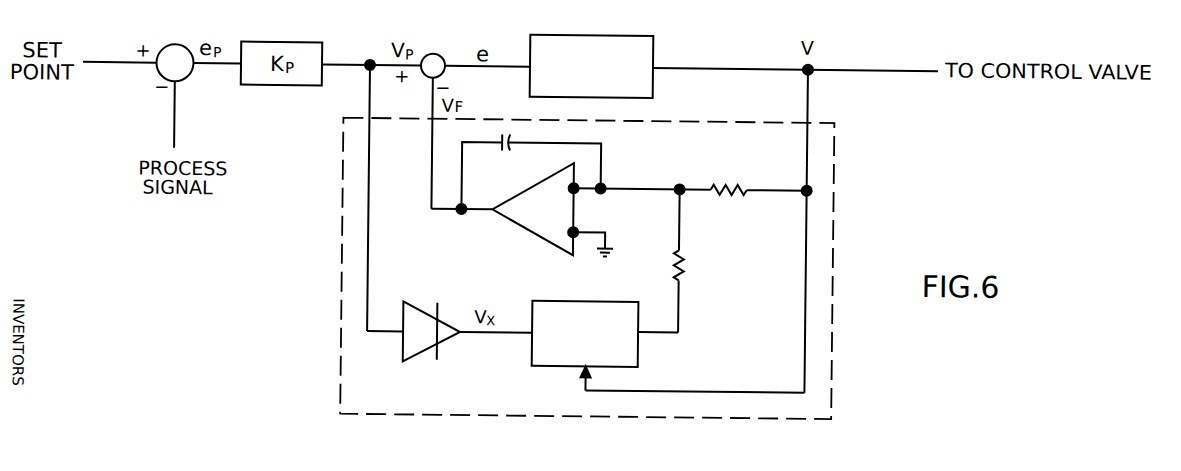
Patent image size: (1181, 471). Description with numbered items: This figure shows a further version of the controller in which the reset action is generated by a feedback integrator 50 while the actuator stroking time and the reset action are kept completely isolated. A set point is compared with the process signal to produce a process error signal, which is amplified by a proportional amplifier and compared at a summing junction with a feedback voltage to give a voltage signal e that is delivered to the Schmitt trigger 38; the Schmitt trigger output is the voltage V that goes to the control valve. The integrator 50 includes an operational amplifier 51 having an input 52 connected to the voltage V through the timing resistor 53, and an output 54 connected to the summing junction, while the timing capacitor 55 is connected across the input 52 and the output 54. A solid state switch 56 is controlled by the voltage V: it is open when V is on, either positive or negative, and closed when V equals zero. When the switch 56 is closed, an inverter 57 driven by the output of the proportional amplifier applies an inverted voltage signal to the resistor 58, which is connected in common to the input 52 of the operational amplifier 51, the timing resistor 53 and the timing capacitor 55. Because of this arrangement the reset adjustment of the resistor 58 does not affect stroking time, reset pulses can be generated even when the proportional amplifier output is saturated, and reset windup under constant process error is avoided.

The Schmitt trigger 38 is at (653, 42).
The integrator 50 is at (836, 162).
The operational amplifier 51 is at (535, 230).
The input 52 is at (577, 186).
The timing resistor 53 is at (728, 184).
The output 54 is at (492, 212).
The timing capacitor 55 is at (504, 141).
The solid state switch 56 is at (640, 349).
The inverter 57 is at (430, 307).
The resistor 58 is at (689, 249).